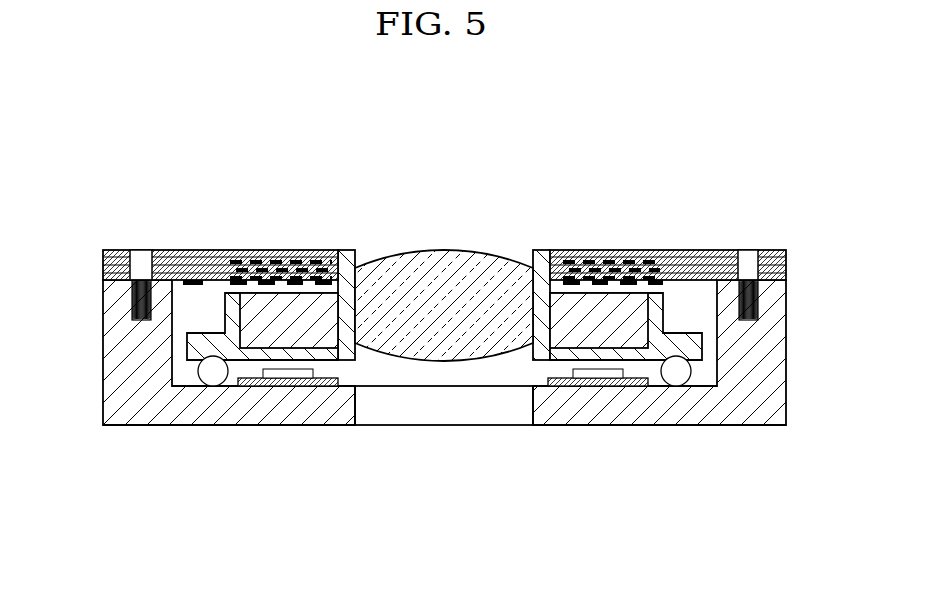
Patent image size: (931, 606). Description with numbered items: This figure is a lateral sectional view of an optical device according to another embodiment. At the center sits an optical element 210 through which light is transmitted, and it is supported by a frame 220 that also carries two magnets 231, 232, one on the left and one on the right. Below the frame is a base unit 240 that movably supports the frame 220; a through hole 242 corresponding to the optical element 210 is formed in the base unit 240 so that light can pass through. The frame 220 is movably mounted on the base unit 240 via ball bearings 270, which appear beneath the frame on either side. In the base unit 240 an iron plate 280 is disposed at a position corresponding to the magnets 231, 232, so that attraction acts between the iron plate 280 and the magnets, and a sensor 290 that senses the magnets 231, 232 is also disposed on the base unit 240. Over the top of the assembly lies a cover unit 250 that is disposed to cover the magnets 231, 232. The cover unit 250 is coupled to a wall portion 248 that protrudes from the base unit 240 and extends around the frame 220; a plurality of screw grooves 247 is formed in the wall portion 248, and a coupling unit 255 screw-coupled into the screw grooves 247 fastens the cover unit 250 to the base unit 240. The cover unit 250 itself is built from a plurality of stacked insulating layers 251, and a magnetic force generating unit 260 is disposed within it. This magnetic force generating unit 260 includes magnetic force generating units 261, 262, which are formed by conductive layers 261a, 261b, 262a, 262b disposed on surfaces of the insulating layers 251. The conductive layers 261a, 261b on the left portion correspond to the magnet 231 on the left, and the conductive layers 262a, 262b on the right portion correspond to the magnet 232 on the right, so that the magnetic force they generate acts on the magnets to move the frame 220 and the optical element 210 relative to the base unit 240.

The optical element 210 is at (443, 352).
The frame 220 is at (451, 336).
The magnet 231 is at (314, 336).
The magnet 232 is at (598, 334).
The base unit 240 is at (448, 398).
The through hole 242 is at (530, 409).
The screw groove 247 is at (135, 320).
The wall portion 248 is at (123, 414).
The cover unit 250 is at (412, 235).
The insulating layer 251 is at (212, 252).
The coupling unit 255 is at (398, 272).
The magnetic force generating unit 260 is at (445, 202).
The magnetic force generating unit 261 is at (284, 221).
The conductive layer 261a is at (268, 253).
The conductive layer 261b is at (287, 252).
The magnetic force generating unit 262 is at (592, 221).
The conductive layer 262a is at (603, 252).
The conductive layer 262b is at (597, 246).
The ball bearing 270 is at (678, 378).
The iron plate 280 is at (231, 388).
The sensor 290 is at (287, 387).